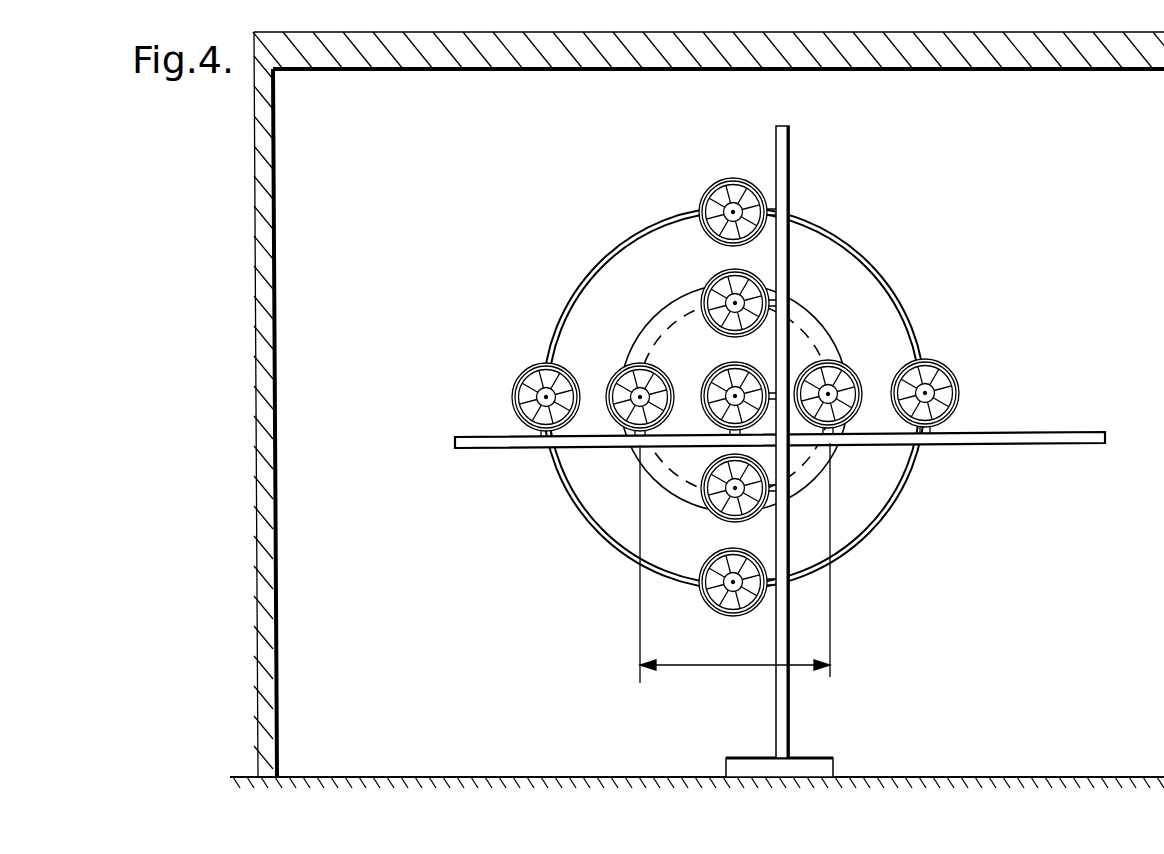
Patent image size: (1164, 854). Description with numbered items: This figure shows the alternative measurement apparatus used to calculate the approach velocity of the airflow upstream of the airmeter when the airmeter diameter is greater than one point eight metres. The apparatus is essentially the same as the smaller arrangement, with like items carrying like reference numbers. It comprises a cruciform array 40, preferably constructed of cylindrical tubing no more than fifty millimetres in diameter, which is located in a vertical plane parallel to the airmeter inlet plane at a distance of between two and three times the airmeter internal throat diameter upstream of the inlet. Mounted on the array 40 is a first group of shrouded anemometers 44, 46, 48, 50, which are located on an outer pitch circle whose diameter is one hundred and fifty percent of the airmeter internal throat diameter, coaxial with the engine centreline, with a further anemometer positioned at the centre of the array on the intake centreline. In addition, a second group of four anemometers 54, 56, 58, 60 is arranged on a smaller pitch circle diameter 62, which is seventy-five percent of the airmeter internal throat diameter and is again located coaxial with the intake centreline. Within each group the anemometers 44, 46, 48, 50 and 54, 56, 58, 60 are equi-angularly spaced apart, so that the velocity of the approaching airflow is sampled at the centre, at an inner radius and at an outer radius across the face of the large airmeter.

The cruciform array 40 is at (1042, 436).
The shrouded anemometer 44 is at (722, 184).
The shrouded anemometer 46 is at (959, 386).
The shrouded anemometer 48 is at (710, 605).
The shrouded anemometer 50 is at (513, 384).
The anemometer 54 is at (711, 280).
The anemometer 56 is at (862, 390).
The anemometer 58 is at (712, 511).
The anemometer 60 is at (622, 365).
The pitch circle diameter 62 is at (735, 665).